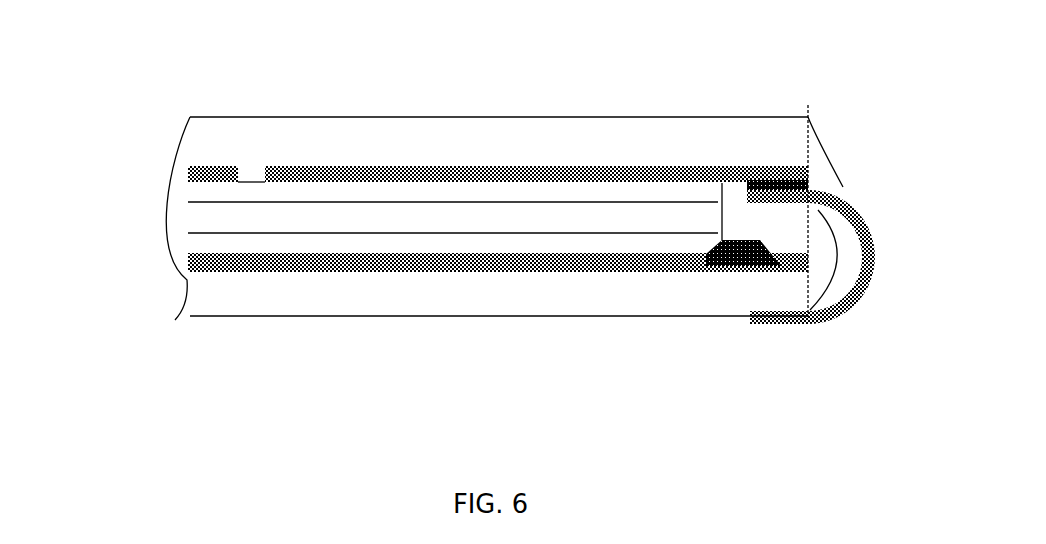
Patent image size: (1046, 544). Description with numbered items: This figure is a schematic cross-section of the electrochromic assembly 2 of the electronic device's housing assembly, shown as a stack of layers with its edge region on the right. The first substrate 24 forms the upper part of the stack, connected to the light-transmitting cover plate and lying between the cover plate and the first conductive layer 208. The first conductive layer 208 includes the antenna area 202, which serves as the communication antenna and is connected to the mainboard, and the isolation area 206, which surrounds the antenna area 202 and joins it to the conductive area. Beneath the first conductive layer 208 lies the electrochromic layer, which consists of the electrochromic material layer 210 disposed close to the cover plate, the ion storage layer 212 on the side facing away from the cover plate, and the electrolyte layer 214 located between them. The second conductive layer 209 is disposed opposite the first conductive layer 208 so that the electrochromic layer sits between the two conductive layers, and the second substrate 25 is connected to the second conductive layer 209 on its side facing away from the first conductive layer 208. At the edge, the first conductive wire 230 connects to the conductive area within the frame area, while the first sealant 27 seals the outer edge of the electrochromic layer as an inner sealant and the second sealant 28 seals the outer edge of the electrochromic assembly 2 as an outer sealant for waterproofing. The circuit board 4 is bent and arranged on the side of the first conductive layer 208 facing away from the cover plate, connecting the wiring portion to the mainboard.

The electrochromic assembly 2 is at (640, 101).
The circuit board 4 is at (858, 236).
The first substrate 24 is at (203, 147).
The second substrate 25 is at (387, 300).
The first sealant 27 is at (818, 210).
The second sealant 28 is at (822, 177).
The antenna area 202 is at (387, 172).
The isolation area 206 is at (252, 170).
The first conductive layer 208 is at (205, 172).
The second conductive layer 209 is at (250, 258).
The electrochromic material layer 210 is at (212, 192).
The ion storage layer 212 is at (202, 247).
The electrolyte layer 214 is at (210, 218).
The first conductive wire 230 is at (757, 268).